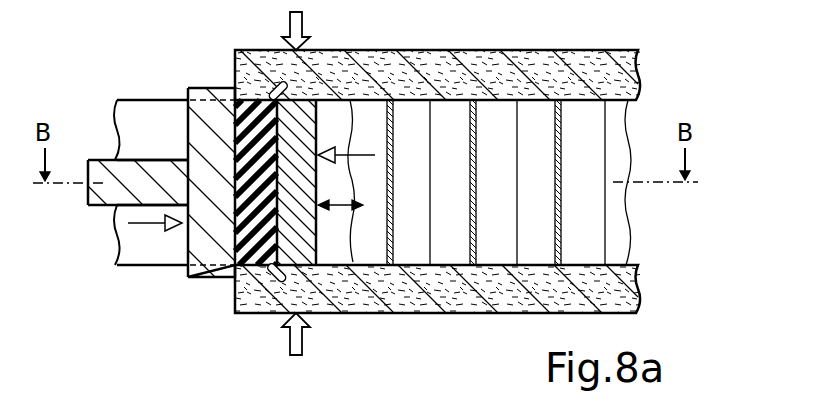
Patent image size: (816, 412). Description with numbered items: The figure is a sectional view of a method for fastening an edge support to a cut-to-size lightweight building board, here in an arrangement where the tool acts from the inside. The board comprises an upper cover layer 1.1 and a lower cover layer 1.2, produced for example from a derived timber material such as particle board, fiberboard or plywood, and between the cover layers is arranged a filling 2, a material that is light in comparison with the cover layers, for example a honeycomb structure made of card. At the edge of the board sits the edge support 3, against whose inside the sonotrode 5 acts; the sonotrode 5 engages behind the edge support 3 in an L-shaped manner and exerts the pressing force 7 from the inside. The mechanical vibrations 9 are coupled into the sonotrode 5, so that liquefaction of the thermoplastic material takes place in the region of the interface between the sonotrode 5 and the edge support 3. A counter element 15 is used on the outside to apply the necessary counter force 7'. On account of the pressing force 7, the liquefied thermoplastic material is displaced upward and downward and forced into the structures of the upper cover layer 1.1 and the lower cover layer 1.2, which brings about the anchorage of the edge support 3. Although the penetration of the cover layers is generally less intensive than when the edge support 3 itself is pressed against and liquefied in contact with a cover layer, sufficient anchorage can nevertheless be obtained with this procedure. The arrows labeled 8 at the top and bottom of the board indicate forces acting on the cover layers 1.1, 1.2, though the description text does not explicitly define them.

The upper cover layer 1.1 is at (633, 60).
The lower cover layer 1.2 is at (638, 278).
The filling 2 is at (582, 222).
The edge support 3 is at (224, 127).
The sonotrode 5 is at (140, 100).
The pressing force 7 is at (347, 137).
The counter force 7' is at (174, 253).
The pressing force 8 is at (305, 19).
The mechanical vibrations 9 is at (341, 210).
The counter element 15 is at (103, 168).